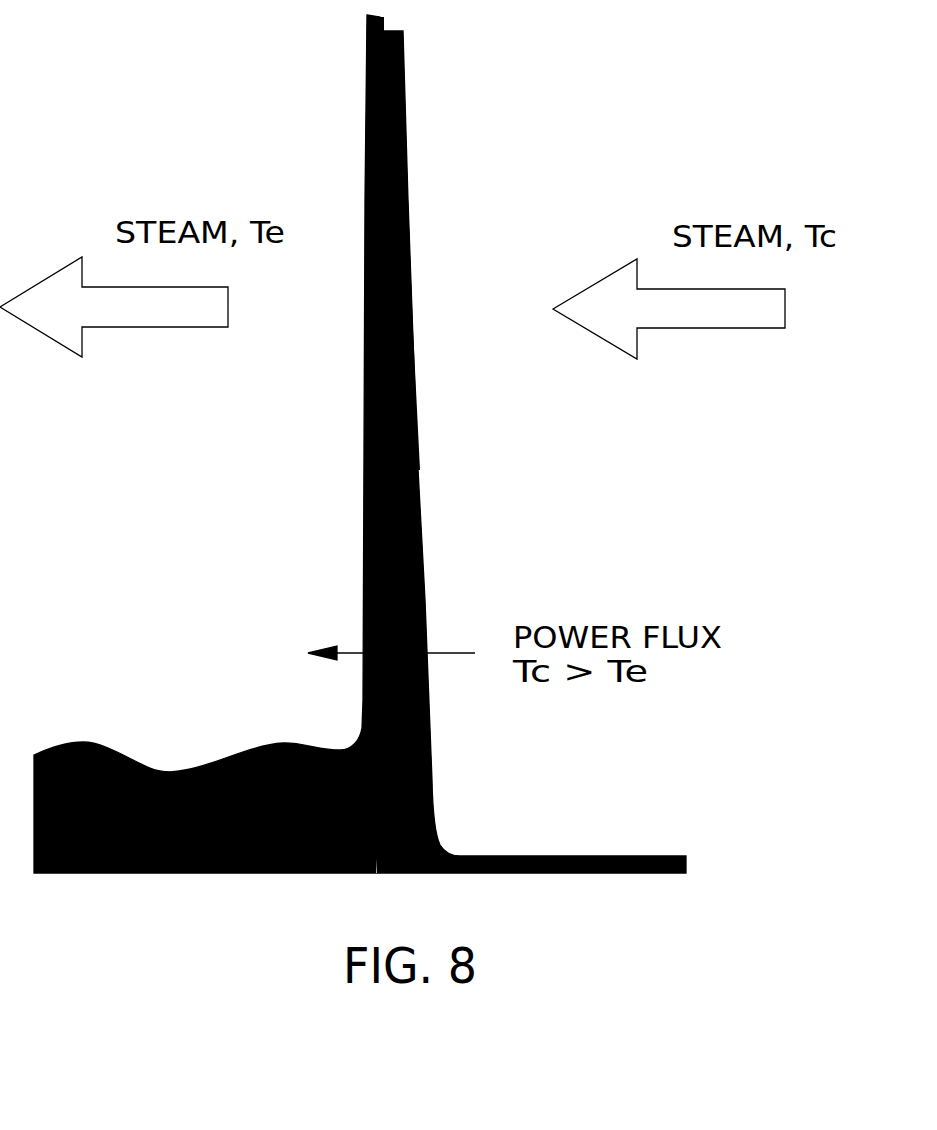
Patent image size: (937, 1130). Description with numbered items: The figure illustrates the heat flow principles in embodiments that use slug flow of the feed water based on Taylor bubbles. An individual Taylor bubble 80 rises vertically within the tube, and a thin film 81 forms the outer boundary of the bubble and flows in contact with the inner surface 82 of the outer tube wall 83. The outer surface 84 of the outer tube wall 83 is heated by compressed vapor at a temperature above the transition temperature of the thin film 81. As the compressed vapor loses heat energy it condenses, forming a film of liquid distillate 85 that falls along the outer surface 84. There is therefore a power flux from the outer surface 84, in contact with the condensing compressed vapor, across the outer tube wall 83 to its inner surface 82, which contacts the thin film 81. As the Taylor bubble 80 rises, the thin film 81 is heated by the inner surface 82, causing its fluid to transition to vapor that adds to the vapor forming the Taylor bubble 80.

The Taylor bubble 80 is at (196, 555).
The thin film 81 is at (373, 197).
The inner surface 82 is at (379, 100).
The outer tube wall 83 is at (405, 87).
The outer surface 84 is at (410, 278).
The film of liquid distillate 85 is at (413, 388).